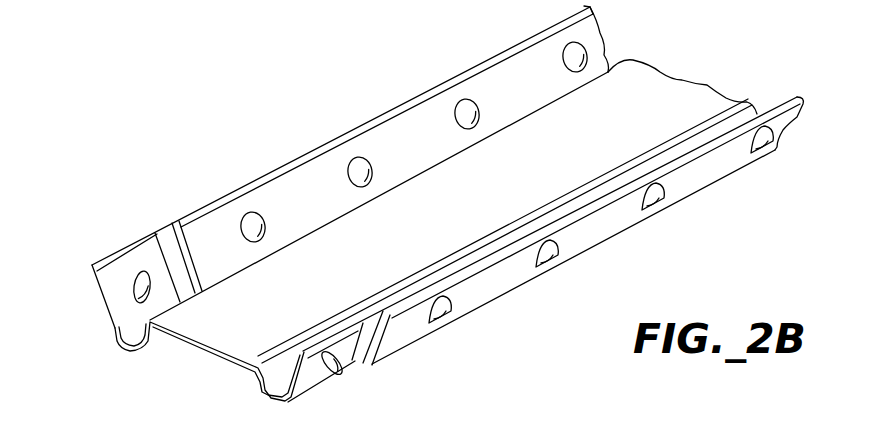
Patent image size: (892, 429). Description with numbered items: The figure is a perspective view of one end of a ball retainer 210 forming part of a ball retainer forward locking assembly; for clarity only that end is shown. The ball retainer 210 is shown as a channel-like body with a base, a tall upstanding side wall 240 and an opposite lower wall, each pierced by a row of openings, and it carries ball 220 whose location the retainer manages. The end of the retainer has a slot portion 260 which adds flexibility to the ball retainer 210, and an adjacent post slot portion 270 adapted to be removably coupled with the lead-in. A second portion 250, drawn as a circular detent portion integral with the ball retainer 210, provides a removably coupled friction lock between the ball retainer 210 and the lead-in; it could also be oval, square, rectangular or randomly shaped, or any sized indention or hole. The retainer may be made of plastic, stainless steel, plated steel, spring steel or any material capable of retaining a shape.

The ball retainer 210 is at (459, 222).
The side flange 240 is at (373, 98).
The ball 220 is at (588, 50).
The second portion 250 is at (140, 270).
The slot portion 260 is at (160, 224).
The post slot portion 270 is at (122, 293).